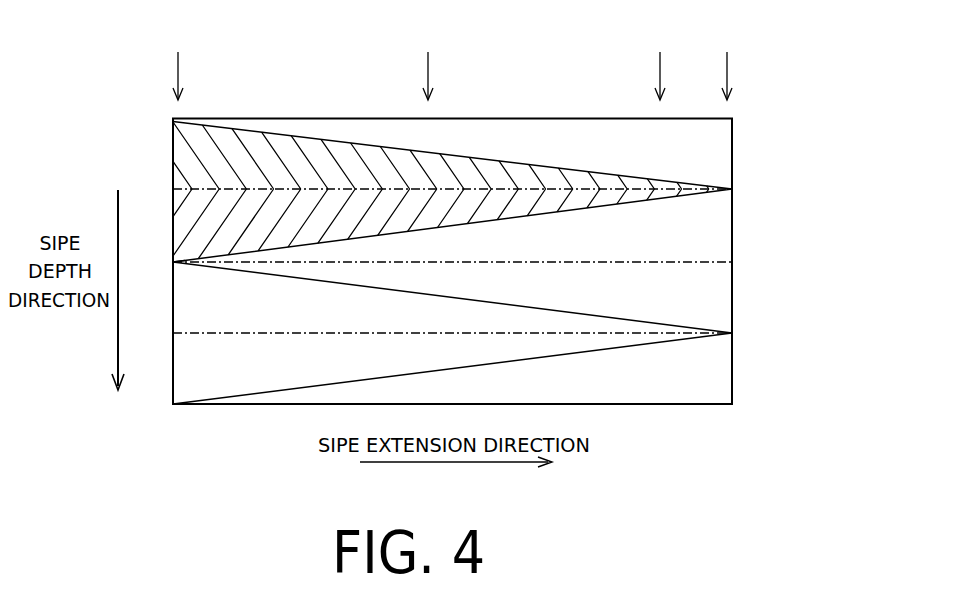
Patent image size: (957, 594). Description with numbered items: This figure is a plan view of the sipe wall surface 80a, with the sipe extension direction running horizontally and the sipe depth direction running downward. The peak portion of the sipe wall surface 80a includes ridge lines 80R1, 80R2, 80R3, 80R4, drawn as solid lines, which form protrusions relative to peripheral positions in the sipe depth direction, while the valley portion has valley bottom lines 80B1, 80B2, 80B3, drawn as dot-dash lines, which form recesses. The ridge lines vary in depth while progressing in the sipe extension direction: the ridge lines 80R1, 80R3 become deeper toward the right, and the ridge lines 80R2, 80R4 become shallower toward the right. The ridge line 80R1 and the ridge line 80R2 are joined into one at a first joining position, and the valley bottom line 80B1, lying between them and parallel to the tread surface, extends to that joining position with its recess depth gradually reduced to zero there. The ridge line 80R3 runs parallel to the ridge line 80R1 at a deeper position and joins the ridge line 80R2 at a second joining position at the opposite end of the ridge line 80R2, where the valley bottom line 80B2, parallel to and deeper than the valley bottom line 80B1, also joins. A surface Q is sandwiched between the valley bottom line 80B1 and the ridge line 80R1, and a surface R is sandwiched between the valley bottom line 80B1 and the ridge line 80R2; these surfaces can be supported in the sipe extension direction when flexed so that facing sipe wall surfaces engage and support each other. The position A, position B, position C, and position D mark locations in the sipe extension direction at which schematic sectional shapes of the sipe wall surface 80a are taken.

The sipe wall surface 80a is at (742, 148).
The valley bottom line 80B1 is at (229, 190).
The valley bottom line 80B2 is at (623, 262).
The valley bottom line 80B3 is at (204, 333).
The ridge line 80R1 is at (450, 162).
The ridge line 80R2 is at (590, 207).
The ridge line 80R3 is at (587, 315).
The ridge line 80R4 is at (583, 355).
The surface Q is at (383, 166).
The surface R is at (195, 236).
The position A is at (178, 59).
The position B is at (428, 59).
The position C is at (660, 59).
The position D is at (726, 59).